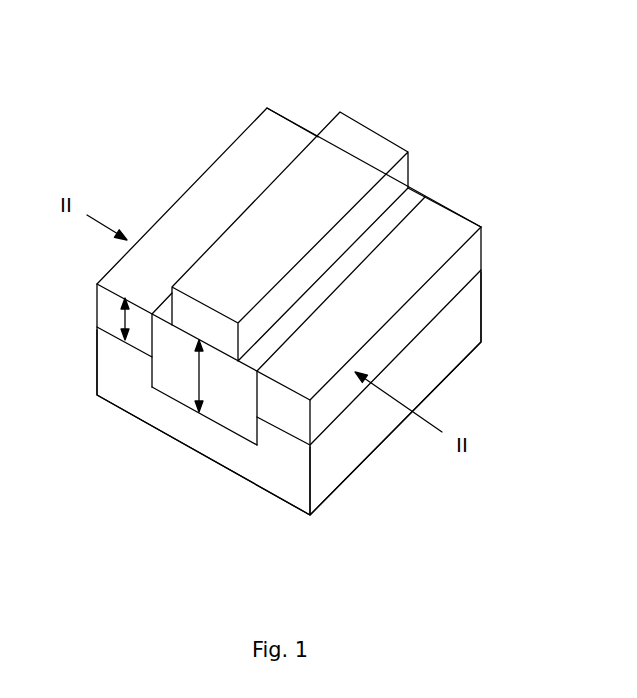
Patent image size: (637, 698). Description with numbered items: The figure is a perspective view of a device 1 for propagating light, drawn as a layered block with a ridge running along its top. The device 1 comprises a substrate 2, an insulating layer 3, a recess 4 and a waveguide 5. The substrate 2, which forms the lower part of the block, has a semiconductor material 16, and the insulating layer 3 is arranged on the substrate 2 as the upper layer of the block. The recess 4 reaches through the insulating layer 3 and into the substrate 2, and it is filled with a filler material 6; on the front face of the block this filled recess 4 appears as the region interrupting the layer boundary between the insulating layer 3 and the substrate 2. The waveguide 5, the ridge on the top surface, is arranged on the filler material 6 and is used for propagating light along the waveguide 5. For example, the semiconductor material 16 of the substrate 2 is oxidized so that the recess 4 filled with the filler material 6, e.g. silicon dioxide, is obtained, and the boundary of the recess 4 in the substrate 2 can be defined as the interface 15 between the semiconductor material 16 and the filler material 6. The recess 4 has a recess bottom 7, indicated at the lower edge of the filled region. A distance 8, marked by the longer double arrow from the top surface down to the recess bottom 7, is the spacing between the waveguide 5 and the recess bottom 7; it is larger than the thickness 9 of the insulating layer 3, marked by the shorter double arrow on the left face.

The device for propagating light 1 is at (458, 105).
The substrate 2 is at (344, 393).
The semiconductor material 16 is at (468, 330).
The insulating layer 3 is at (468, 258).
The recess 4 is at (288, 372).
The filler material 6 is at (235, 420).
The waveguide 5 is at (398, 182).
The recess bottom 7 is at (195, 442).
The interface 15 is at (208, 420).
The distance 8 is at (198, 386).
The thickness 9 is at (120, 316).